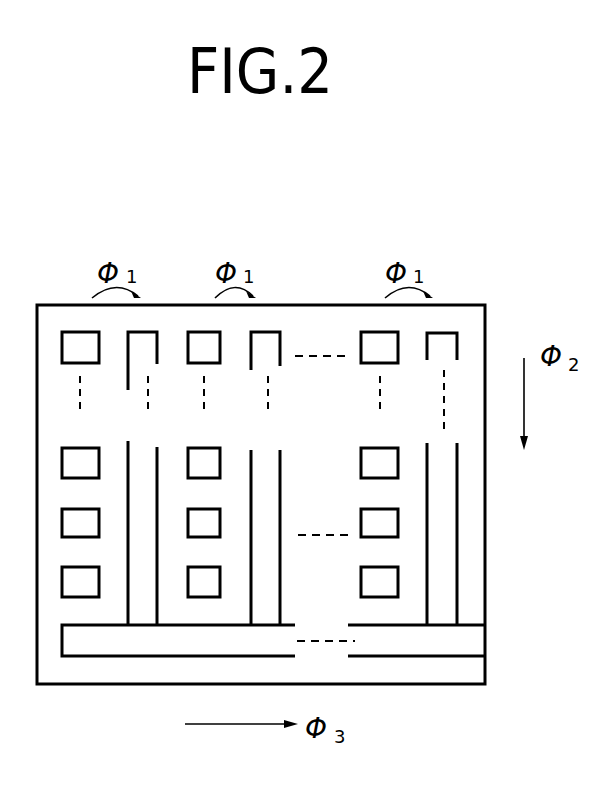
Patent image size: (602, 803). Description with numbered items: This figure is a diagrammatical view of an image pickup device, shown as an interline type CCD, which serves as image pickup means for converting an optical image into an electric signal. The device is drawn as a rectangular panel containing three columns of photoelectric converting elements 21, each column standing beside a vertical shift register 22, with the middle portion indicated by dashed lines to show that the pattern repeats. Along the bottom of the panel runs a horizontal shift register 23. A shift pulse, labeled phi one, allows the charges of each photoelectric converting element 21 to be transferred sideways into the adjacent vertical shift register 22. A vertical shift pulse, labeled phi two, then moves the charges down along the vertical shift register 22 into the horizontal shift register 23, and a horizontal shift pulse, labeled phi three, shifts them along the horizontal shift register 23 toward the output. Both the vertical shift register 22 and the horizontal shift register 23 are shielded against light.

The photoelectric converting element 21 is at (72, 340).
The vertical shift register 22 is at (150, 338).
The horizontal shift register 23 is at (145, 653).